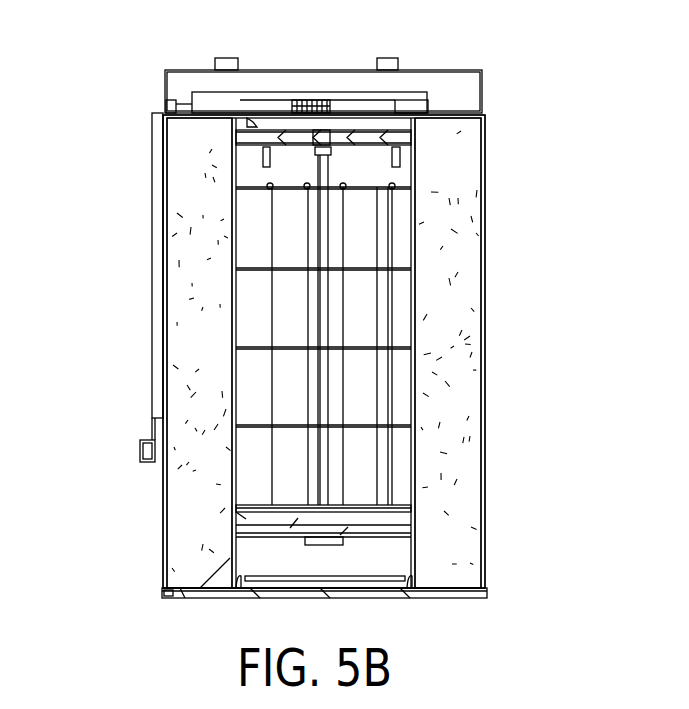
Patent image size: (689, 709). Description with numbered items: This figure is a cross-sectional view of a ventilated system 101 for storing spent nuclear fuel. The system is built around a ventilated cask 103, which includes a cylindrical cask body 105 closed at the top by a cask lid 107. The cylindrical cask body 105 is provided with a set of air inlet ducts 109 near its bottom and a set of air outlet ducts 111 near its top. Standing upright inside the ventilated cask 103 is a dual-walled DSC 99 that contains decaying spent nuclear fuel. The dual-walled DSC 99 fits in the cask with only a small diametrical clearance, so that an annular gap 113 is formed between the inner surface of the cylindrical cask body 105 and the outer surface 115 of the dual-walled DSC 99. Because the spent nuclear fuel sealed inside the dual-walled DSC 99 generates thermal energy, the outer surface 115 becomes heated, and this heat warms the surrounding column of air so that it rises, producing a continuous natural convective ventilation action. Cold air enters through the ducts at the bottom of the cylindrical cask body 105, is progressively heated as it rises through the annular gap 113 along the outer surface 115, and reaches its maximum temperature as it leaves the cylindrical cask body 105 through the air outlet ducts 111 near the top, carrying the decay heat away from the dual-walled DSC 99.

The ventilated system 101 is at (522, 117).
The ventilated cask 103 is at (484, 202).
The cylindrical cask body 105 is at (475, 267).
The cask lid 107 is at (473, 92).
The air inlet ducts 109 is at (165, 592).
The air outlet ducts 111 is at (180, 110).
The annular gap 113 is at (408, 348).
The outer surface 115 is at (413, 398).
The dual-walled DSC 99 is at (410, 452).